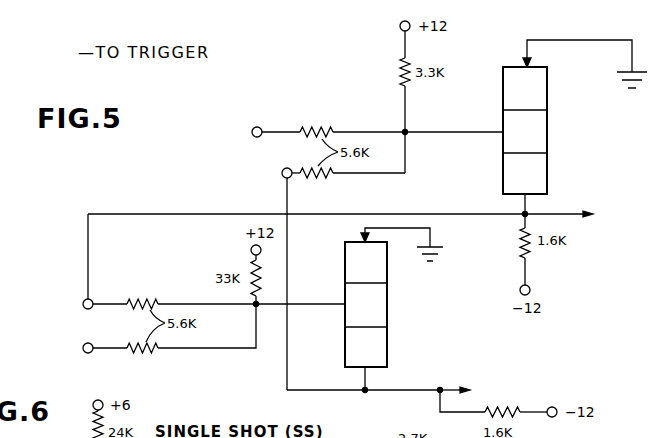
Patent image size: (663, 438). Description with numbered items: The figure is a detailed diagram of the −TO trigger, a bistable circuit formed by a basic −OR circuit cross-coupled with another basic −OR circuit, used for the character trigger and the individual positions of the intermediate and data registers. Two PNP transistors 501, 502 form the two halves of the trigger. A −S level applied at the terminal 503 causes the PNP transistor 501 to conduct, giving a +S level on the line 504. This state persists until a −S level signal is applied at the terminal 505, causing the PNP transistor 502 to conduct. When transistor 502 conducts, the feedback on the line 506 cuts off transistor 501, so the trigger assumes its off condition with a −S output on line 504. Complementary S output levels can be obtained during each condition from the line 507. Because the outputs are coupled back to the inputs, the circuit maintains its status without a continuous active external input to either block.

The PNP transistor 501 is at (548, 138).
The PNP transistor 502 is at (388, 314).
The terminal 503 is at (252, 130).
The line 504 is at (563, 206).
The terminal 505 is at (83, 346).
The line 506 is at (285, 196).
The line 507 is at (418, 383).